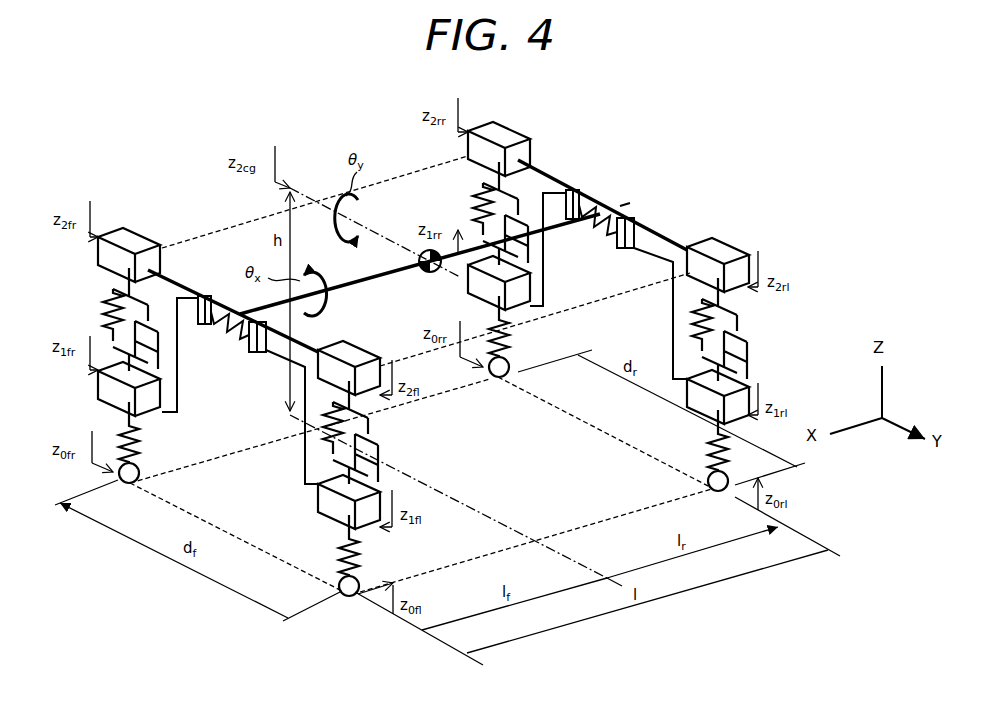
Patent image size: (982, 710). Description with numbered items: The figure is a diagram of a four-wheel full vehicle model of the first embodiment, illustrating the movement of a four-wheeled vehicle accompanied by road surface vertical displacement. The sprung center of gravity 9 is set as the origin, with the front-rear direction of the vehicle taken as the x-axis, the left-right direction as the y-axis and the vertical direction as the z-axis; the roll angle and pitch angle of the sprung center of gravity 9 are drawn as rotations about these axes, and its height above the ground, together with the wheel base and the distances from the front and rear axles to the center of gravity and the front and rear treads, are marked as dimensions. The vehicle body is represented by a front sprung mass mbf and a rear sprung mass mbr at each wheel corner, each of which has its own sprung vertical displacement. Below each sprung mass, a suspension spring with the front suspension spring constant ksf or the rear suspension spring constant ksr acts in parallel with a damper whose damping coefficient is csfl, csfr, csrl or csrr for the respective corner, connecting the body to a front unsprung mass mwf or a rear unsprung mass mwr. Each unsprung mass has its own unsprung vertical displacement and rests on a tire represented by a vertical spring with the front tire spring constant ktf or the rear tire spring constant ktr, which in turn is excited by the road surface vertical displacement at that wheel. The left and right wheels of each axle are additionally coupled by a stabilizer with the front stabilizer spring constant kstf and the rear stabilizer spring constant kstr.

The sprung center of gravity 9 is at (420, 272).
The front sprung mass mbf is at (345, 340).
The rear sprung mass mbr is at (710, 243).
The front suspension spring constant ksf is at (322, 444).
The rear suspension spring constant ksr is at (688, 314).
The front-right suspension damping coefficient csfr is at (165, 355).
The front-left suspension damping coefficient csfl is at (380, 450).
The rear-right suspension damping coefficient csrr is at (530, 248).
The rear-left suspension damping coefficient csrl is at (749, 347).
The front unsprung mass mwf is at (318, 503).
The rear unsprung mass mwr is at (686, 402).
The front tire vertical spring constant ktf is at (239, 499).
The rear tire vertical spring constant ktr is at (512, 358).
The front stabilizer spring constant kstf is at (232, 332).
The rear stabilizer spring constant kstr is at (600, 225).